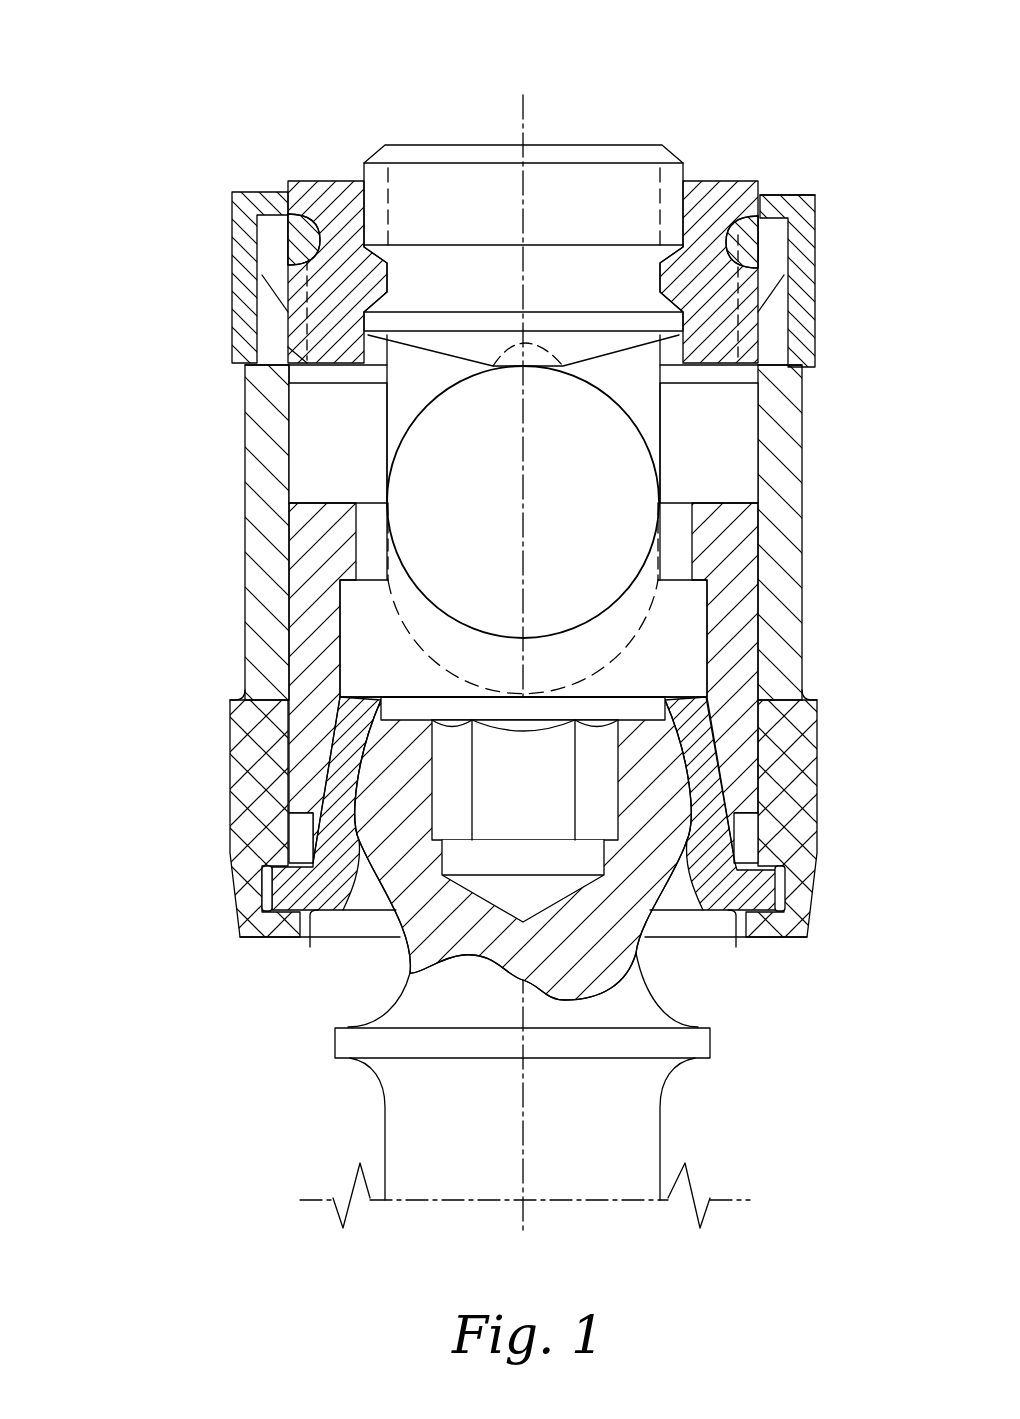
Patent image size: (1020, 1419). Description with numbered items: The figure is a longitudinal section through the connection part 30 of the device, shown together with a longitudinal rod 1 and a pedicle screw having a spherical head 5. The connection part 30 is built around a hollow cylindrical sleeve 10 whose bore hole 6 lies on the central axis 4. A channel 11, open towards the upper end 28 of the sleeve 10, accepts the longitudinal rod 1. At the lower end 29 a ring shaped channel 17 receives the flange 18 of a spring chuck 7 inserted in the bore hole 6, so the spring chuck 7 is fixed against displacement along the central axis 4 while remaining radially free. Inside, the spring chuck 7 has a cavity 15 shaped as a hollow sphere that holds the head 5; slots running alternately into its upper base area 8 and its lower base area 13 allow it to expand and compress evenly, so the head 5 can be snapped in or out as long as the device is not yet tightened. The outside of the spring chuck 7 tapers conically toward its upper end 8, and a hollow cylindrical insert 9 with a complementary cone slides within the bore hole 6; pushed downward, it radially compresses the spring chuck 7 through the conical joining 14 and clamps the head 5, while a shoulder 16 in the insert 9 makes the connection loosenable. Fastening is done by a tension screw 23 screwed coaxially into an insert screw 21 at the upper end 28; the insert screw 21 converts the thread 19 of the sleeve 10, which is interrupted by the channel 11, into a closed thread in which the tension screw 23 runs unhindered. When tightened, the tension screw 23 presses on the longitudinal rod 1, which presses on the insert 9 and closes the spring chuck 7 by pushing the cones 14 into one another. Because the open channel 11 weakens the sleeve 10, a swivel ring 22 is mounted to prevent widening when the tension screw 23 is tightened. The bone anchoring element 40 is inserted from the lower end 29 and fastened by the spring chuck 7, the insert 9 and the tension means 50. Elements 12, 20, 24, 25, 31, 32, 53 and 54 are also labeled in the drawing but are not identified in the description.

The longitudinal rod 1 is at (630, 470).
The central axis 4 is at (532, 117).
The head 5 is at (762, 732).
The bore hole 6 is at (737, 452).
The spring chuck 7 is at (780, 838).
The upper base area 8 is at (706, 692).
The insert 9 is at (745, 540).
The sleeve 10 is at (266, 475).
The channel 11 is at (400, 400).
The ball seat 12 is at (340, 595).
The lower base area 13 is at (356, 942).
The conical joining 14 is at (440, 770).
The cavity 15 is at (322, 836).
The shoulder 16 is at (322, 542).
The channel 17 is at (268, 893).
The flange 18 is at (292, 937).
The thread 19 is at (801, 258).
The sealing lip 20 is at (296, 272).
The insert screw 21 is at (340, 181).
The swivel ring 22 is at (240, 220).
The tension screw 23 is at (462, 185).
The lip 24 is at (292, 186).
The lip 25 is at (728, 220).
The upper end 28 is at (792, 198).
The lower end 29 is at (762, 948).
The connection part 30 is at (216, 396).
The retaining ring 31 is at (786, 906).
The sleeve 32 is at (690, 777).
The bone anchoring element 40 is at (303, 1065).
The tension means 50 is at (668, 85).
The bellows bulge 53 is at (652, 1000).
The sleeve wall 54 is at (302, 742).